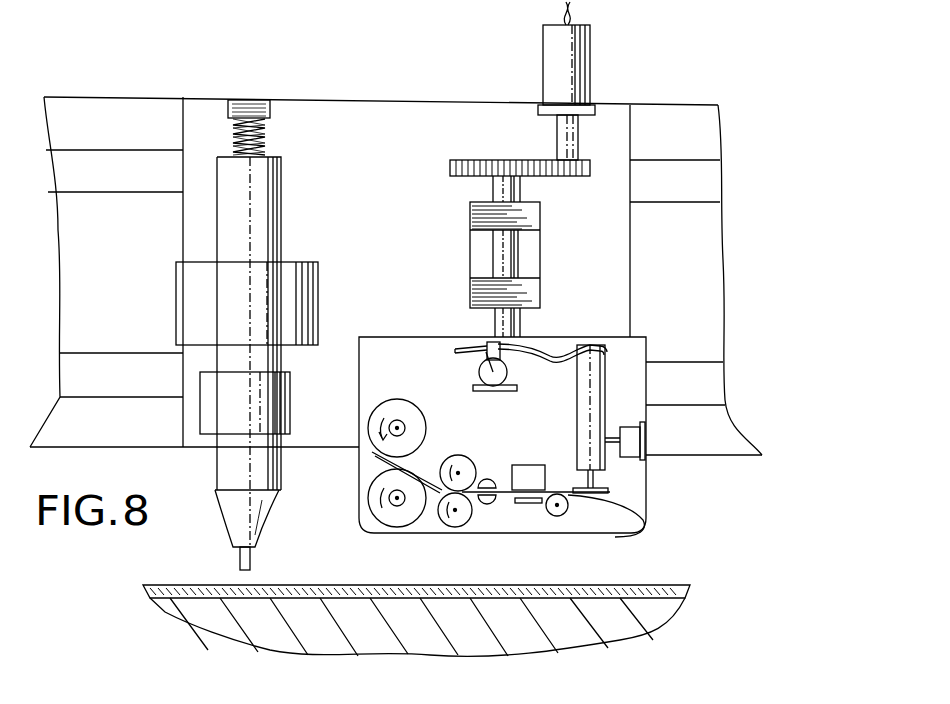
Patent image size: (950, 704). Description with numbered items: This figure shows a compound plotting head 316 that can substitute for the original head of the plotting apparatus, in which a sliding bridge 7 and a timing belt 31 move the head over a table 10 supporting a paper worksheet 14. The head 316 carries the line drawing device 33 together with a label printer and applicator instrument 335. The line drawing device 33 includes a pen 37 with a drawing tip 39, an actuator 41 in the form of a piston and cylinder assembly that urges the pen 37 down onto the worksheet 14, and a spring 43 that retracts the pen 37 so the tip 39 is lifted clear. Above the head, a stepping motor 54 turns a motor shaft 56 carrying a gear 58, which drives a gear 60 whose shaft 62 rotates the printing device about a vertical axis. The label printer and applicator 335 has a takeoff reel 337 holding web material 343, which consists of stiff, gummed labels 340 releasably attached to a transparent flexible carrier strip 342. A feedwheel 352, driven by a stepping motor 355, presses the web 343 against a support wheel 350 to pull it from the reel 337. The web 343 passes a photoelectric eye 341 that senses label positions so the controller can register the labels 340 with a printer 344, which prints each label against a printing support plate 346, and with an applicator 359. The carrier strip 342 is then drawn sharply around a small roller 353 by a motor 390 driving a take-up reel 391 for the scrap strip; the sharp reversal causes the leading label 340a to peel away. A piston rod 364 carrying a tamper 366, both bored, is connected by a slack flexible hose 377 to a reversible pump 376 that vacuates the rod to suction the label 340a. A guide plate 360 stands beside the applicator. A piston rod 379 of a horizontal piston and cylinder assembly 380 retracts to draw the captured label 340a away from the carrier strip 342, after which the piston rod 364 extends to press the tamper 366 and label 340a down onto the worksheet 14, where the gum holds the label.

The sliding bridge 7 is at (120, 97).
The table 10 is at (222, 620).
The paper worksheet 14 is at (662, 592).
The timing belt 31 is at (85, 212).
The line drawing device 33 is at (188, 378).
The pen 37 is at (205, 518).
The drawing tip 39 is at (250, 560).
The actuator 41 is at (318, 305).
The spring 43 is at (288, 149).
The stepping motor 54 is at (591, 55).
The motor shaft 56 is at (579, 143).
The gear 58 is at (578, 178).
The gear 60 is at (460, 177).
The shaft 62 is at (520, 248).
The compound plotting head 316 is at (340, 80).
The label printer and applicator instrument 335 is at (634, 330).
The takeoff reel 337 is at (378, 410).
The labels 340 is at (380, 472).
The label 340a is at (643, 528).
The photoelectric eye 341 is at (500, 478).
The carrier strip 342 is at (417, 527).
The web material 343 is at (437, 470).
The printer 344 is at (540, 465).
The printing support plate 346 is at (528, 503).
The support wheel 350 is at (486, 453).
The feedwheel 352 is at (448, 520).
The roller 353 is at (566, 508).
The stepping motor 355 is at (455, 512).
The applicator 359 is at (617, 372).
The guide plate 360 is at (580, 412).
The piston rod 364 is at (598, 482).
The tamper 366 is at (602, 490).
The reversible pump 376 is at (490, 368).
The slack flexible hose 377 is at (553, 347).
The piston rod 379 is at (612, 437).
The piston and cylinder assembly 380 is at (632, 433).
The motor 390 is at (398, 505).
The take-up reel 391 is at (378, 488).